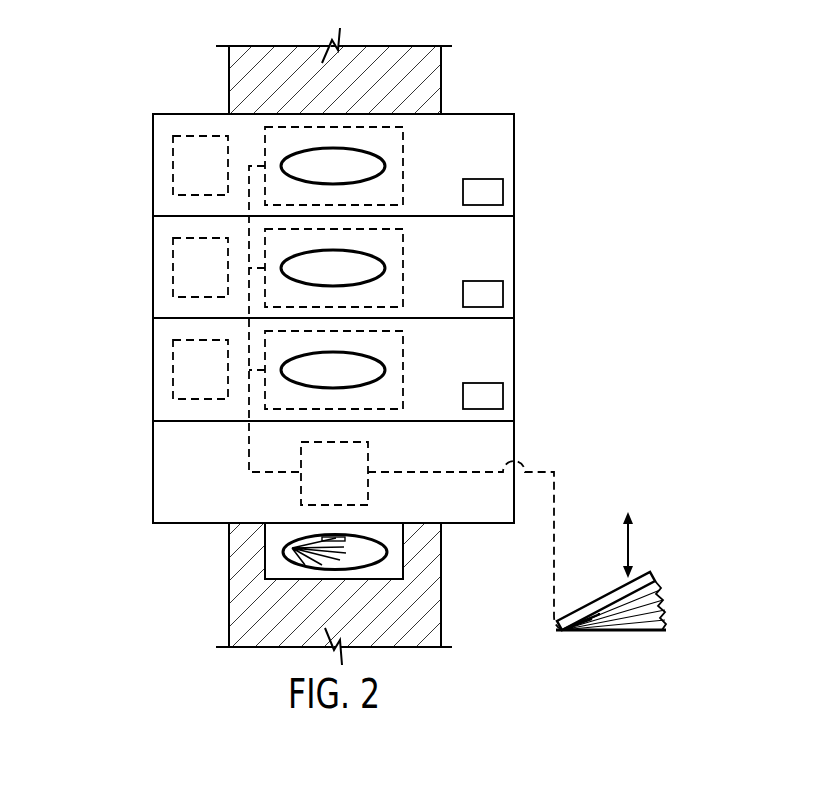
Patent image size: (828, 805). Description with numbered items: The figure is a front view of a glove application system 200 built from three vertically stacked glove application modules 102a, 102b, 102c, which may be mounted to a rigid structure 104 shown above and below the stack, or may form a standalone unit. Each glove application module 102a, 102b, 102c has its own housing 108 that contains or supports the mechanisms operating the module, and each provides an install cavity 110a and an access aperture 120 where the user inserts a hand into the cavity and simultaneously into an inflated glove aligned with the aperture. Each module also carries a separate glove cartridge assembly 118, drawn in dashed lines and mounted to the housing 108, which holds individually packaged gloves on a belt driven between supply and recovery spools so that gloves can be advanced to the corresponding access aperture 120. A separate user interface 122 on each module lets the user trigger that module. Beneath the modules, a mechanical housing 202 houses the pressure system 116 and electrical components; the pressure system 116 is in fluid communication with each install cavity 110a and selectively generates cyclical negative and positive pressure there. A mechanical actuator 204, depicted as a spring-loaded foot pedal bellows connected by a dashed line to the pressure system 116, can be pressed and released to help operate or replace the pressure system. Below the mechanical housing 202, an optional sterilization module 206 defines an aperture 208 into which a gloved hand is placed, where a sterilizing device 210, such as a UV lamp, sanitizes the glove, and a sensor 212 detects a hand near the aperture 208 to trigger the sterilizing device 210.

The glove application system 200 is at (97, 62).
The rigid structure 104 is at (441, 81).
The glove application module 102a is at (146, 147).
The glove application module 102b is at (146, 249).
The glove application module 102c is at (146, 351).
The housing 108 is at (153, 202).
The install cavity 110a is at (400, 132).
The pressure system 116 is at (352, 486).
The glove cartridge assembly 118 is at (218, 179).
The access aperture 120 is at (376, 172).
The user interface 122 is at (503, 192).
The mechanical housing 202 is at (153, 508).
The mechanical actuator 204 is at (676, 584).
The sterilization module 206 is at (257, 543).
The aperture 208 is at (373, 548).
The sterilizing device 210 is at (290, 548).
The sensor 212 is at (355, 540).